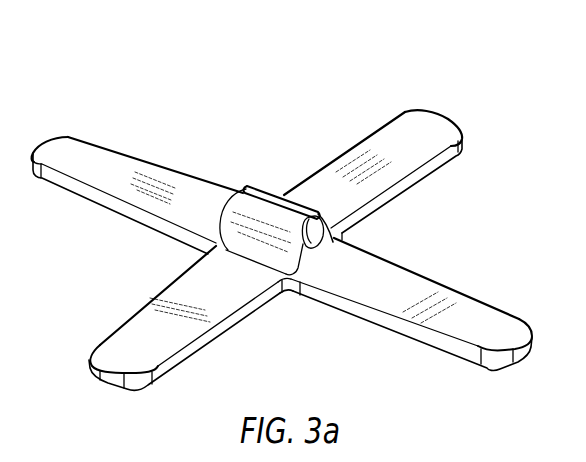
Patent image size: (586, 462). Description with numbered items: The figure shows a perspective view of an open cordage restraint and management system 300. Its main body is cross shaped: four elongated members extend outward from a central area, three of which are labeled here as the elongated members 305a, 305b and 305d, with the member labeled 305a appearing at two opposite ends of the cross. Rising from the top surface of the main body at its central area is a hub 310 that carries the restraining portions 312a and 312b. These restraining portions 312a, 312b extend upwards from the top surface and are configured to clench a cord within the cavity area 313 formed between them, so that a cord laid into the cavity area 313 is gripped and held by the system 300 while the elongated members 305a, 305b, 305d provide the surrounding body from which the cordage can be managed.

The open cordage restraint and management system 300 is at (89, 42).
The elongated member 305a is at (65, 147).
The elongated member 305b is at (423, 122).
The elongated member 305d is at (110, 351).
The central hub / clamp 310 is at (268, 183).
The restraining portion 312a is at (203, 242).
The restraining portion 312b is at (296, 190).
The cavity area 313 is at (238, 187).